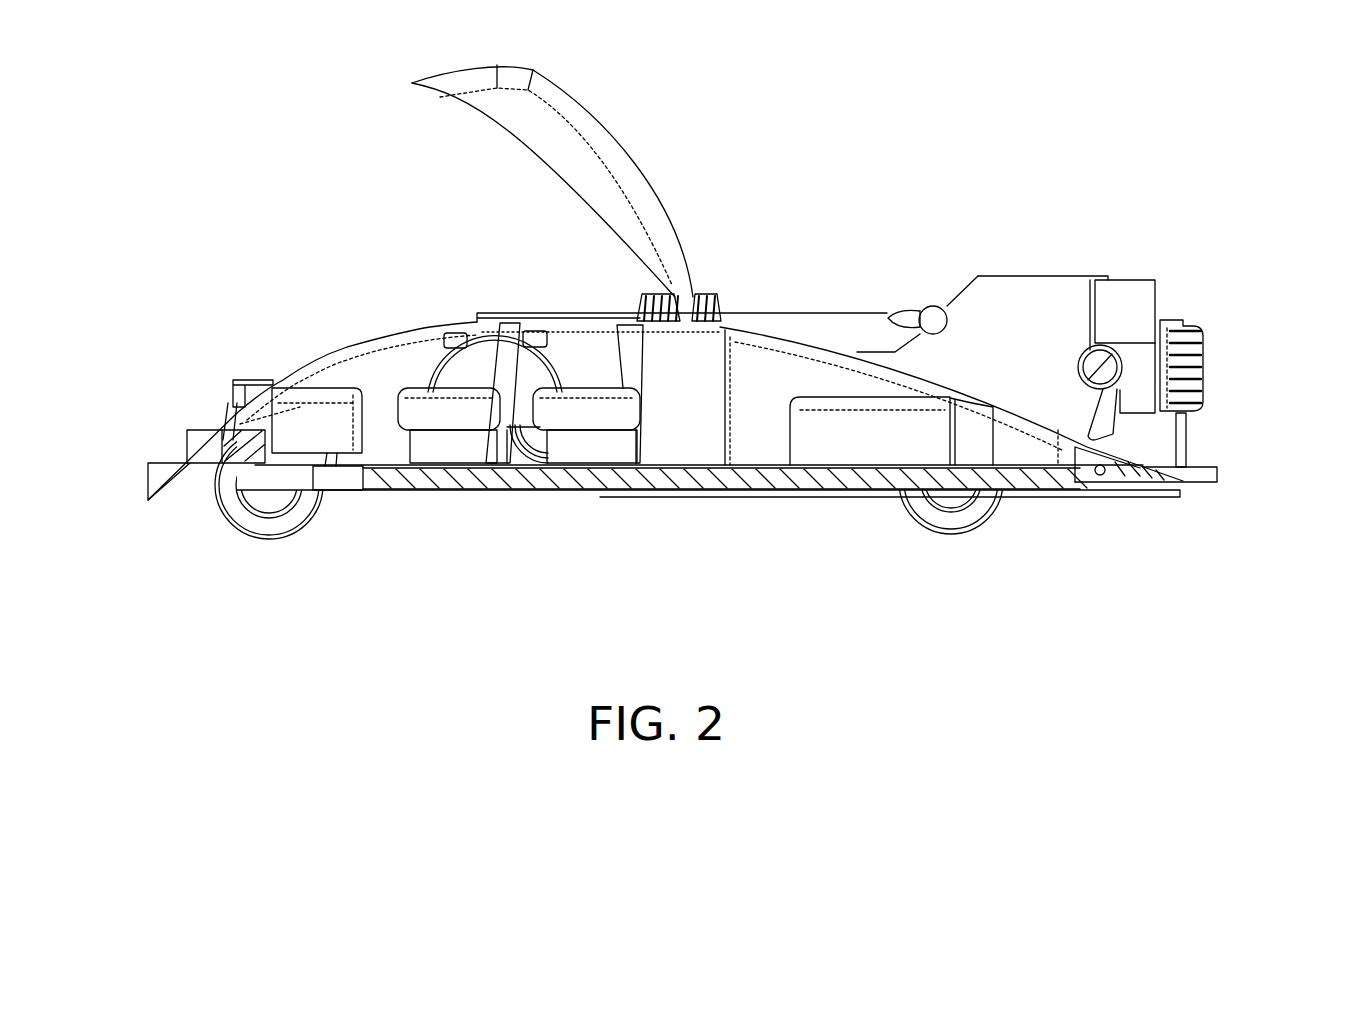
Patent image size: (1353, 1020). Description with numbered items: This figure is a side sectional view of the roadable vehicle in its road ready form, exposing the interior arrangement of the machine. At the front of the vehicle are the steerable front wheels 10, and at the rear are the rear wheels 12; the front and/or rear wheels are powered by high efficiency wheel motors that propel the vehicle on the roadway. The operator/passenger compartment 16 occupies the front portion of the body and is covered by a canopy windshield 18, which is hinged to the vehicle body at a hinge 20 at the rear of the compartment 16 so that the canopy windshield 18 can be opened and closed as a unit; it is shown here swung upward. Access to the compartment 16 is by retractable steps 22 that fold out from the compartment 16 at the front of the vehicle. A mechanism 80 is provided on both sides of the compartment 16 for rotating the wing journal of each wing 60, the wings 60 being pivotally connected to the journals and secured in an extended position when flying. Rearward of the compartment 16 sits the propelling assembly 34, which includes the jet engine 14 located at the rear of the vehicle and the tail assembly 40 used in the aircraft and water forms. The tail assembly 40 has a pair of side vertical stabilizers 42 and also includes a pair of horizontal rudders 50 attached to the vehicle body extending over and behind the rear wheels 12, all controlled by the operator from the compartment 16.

The front wheels 10 is at (295, 537).
The rear wheels 12 is at (963, 540).
The jet engine 14 is at (1203, 330).
The operator/passenger compartment 16 is at (385, 362).
The canopy windshield 18 is at (568, 87).
The hinge 20 is at (707, 293).
The retractable steps 22 is at (163, 457).
The propelling assembly 34 is at (1184, 233).
The tail assembly 40 is at (1200, 304).
The side vertical stabilizers 42 is at (973, 282).
The horizontal rudders 50 is at (1220, 463).
The wings 60 is at (818, 313).
The mechanism 80 is at (477, 313).